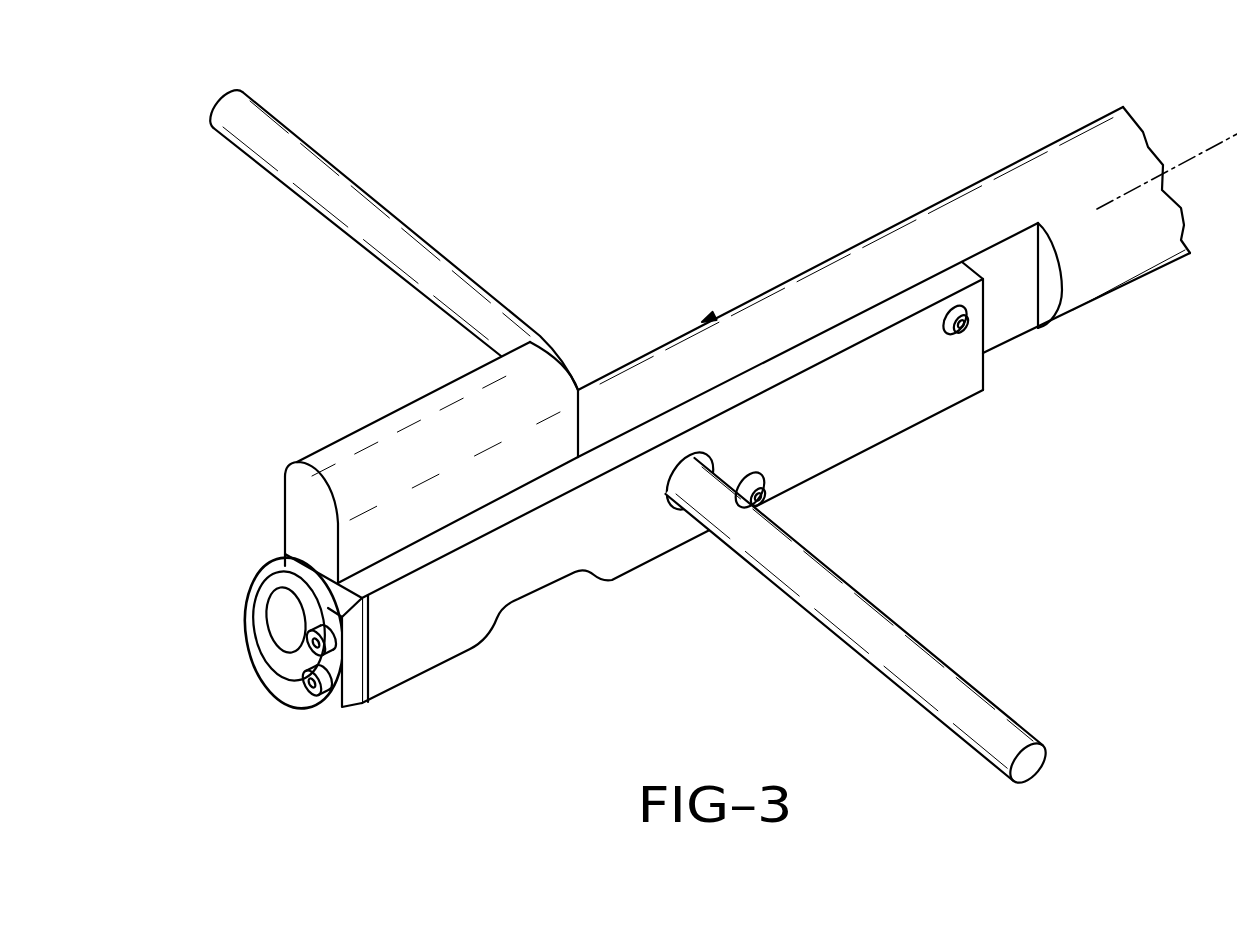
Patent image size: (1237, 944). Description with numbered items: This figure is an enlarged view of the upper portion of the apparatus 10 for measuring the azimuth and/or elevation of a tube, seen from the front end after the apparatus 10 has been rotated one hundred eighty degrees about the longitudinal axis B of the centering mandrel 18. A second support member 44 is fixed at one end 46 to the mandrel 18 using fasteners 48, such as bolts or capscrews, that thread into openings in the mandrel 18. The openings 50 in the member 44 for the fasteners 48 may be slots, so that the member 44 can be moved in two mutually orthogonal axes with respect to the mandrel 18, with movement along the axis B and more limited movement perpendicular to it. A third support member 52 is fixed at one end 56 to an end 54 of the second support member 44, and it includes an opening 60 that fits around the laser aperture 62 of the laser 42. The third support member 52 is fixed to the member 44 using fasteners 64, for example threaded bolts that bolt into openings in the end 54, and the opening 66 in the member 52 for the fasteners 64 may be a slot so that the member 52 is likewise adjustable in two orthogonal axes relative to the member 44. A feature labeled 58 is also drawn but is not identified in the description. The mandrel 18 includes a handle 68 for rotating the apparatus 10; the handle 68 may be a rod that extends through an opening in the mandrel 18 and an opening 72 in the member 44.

The apparatus 10 is at (668, 156).
The centering mandrel 18 is at (952, 191).
The longitudinal axis B is at (1197, 157).
The laser 42 is at (397, 450).
The second support member 44 is at (497, 636).
The end of second support member 46 is at (987, 318).
The fasteners 48 is at (964, 329).
The openings 50 is at (940, 326).
The third support member 52 is at (279, 662).
The end of second support member 54 is at (392, 690).
The end of third support member 56 is at (350, 690).
The ring 58 is at (256, 604).
The opening 60 is at (273, 596).
The laser aperture 62 is at (300, 623).
The fasteners 64 is at (317, 650).
The opening 66 is at (341, 656).
The handle 68 is at (380, 230).
The opening 72 is at (680, 498).